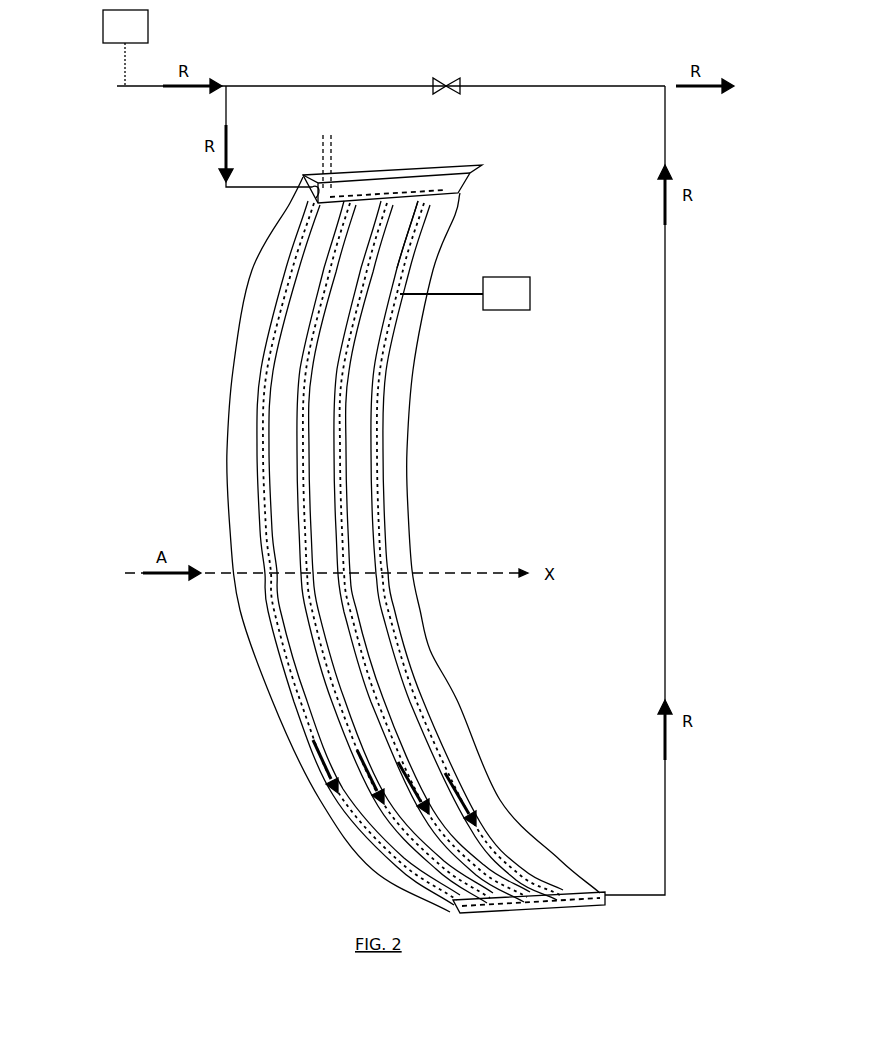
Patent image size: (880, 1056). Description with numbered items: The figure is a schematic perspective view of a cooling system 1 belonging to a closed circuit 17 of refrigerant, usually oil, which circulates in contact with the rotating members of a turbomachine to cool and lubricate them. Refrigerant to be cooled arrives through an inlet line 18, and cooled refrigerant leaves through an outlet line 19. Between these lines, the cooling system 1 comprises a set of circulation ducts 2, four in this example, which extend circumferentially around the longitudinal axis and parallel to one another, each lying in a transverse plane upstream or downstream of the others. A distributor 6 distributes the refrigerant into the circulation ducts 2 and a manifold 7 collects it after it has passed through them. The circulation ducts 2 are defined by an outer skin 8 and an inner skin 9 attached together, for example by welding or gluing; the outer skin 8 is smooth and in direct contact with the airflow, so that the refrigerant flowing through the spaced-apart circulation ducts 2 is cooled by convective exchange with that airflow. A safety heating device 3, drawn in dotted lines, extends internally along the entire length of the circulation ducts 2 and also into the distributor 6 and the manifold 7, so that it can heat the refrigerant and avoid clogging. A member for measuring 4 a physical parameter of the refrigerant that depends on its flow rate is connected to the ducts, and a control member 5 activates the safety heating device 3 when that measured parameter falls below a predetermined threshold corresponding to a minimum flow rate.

The cooling system 1 is at (182, 298).
The circulation ducts 2 is at (258, 413).
The safety heating device 3 is at (432, 226).
The member for measuring 4 is at (465, 293).
The control member 5 is at (125, 48).
The distributor 6 is at (428, 172).
The manifold 7 is at (593, 892).
The outer skin 8 is at (503, 543).
The inner skin 9 is at (430, 652).
The closed circuit 17 is at (95, 80).
The inlet line 18 is at (226, 118).
The outlet line 19 is at (669, 573).